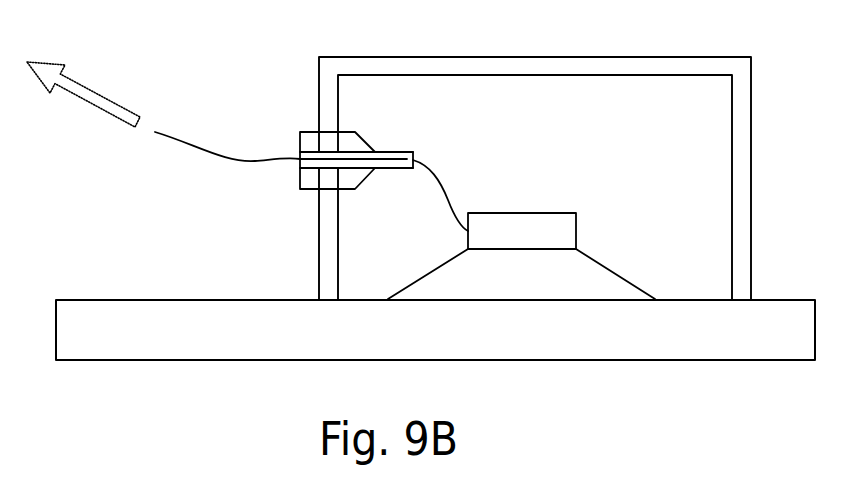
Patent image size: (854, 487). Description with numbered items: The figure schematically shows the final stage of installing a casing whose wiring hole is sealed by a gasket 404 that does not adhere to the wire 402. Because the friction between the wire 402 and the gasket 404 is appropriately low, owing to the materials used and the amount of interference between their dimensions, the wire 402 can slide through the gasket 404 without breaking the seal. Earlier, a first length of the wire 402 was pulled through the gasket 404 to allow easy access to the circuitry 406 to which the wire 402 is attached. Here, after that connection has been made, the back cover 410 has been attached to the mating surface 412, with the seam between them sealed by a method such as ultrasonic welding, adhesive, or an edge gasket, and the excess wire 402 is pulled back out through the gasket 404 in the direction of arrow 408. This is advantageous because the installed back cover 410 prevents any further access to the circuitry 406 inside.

The wire 402 is at (443, 197).
The gasket 404 is at (300, 187).
The circuitry 406 is at (607, 267).
The arrow 408 is at (88, 88).
The back cover 410 is at (752, 87).
The mating surface 412 is at (576, 361).